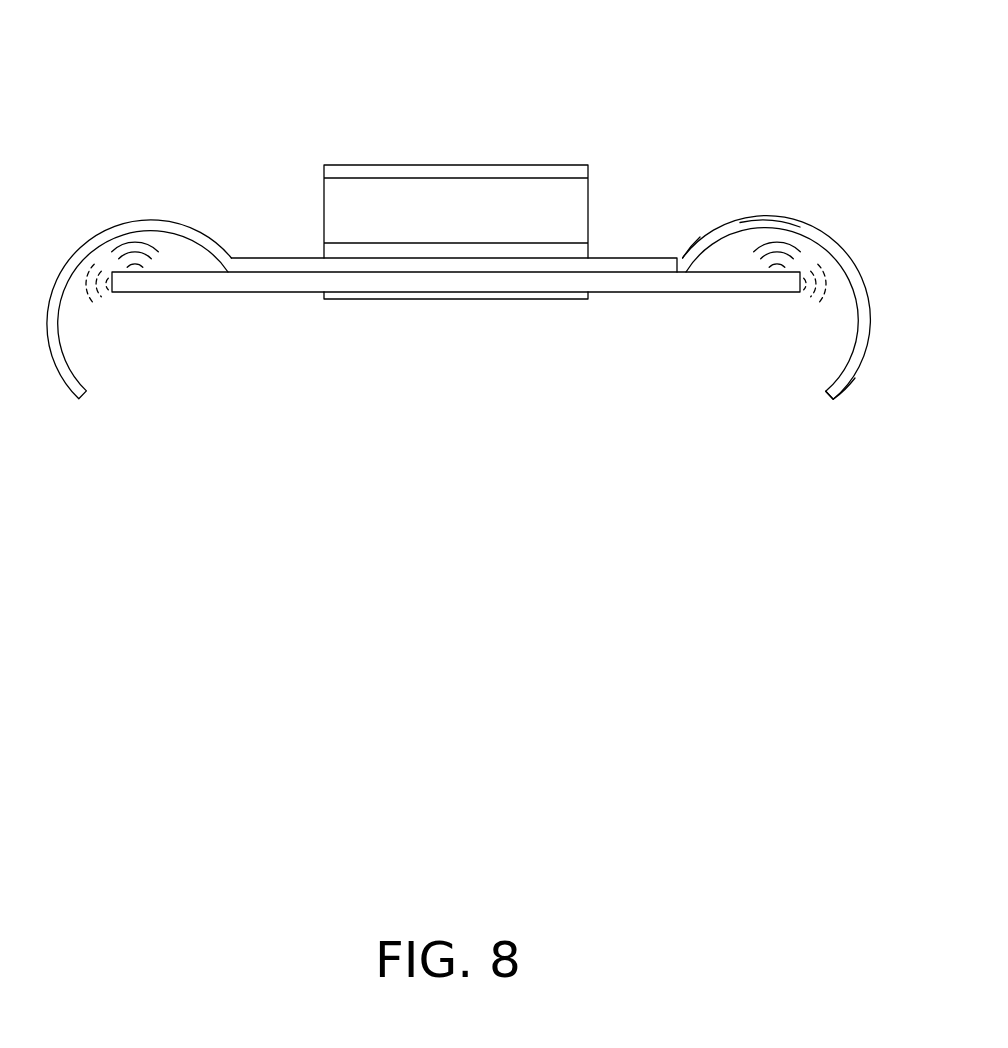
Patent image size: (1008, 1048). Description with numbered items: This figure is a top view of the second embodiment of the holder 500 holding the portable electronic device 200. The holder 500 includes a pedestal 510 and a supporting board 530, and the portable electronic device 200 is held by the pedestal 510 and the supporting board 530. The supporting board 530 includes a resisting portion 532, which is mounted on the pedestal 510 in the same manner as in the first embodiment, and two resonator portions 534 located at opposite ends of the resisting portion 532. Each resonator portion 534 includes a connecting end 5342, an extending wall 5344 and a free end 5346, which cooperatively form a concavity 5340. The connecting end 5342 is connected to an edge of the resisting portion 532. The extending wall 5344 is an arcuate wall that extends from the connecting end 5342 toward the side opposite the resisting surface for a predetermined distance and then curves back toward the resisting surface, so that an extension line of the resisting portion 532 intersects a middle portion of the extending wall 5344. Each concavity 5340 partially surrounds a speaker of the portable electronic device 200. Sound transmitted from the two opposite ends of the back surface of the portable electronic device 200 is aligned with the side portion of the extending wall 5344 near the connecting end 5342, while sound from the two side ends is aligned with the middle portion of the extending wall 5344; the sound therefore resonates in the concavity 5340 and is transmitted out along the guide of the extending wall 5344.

The holder 500 is at (443, 66).
The portable electronic device 200 is at (628, 282).
The pedestal 510 is at (420, 202).
The supporting board 530 is at (287, 126).
The resisting portion 532 is at (248, 263).
The resonator portion 534 is at (145, 225).
The concavity 5340 is at (732, 257).
The connecting end 5342 is at (678, 262).
The extending wall 5344 is at (772, 225).
The free end 5346 is at (830, 392).